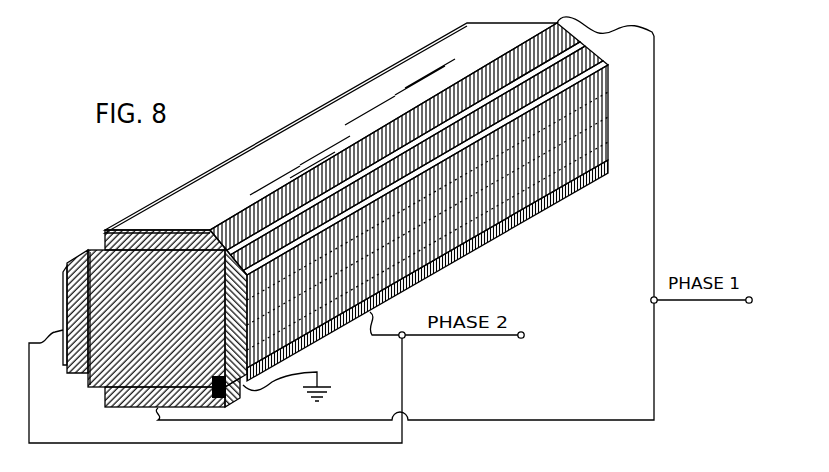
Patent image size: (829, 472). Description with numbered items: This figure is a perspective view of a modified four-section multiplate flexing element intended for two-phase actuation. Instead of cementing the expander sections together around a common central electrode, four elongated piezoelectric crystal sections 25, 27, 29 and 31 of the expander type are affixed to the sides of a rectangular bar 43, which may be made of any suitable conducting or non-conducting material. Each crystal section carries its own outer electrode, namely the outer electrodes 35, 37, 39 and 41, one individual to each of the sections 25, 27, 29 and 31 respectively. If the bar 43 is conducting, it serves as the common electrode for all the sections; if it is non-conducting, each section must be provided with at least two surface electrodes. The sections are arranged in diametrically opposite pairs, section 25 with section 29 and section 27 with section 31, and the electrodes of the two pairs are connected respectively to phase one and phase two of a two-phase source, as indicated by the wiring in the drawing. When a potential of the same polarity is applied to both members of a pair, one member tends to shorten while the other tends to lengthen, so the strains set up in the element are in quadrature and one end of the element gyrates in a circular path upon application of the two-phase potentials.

The piezoelectric crystal section 25 is at (112, 242).
The piezoelectric crystal section 27 is at (598, 172).
The piezoelectric crystal section 29 is at (112, 396).
The piezoelectric crystal section 31 is at (80, 292).
The outer electrode 35 is at (218, 190).
The outer electrode 37 is at (603, 135).
The outer electrode 39 is at (127, 408).
The outer electrode 41 is at (62, 308).
The rectangular bar 43 is at (103, 268).